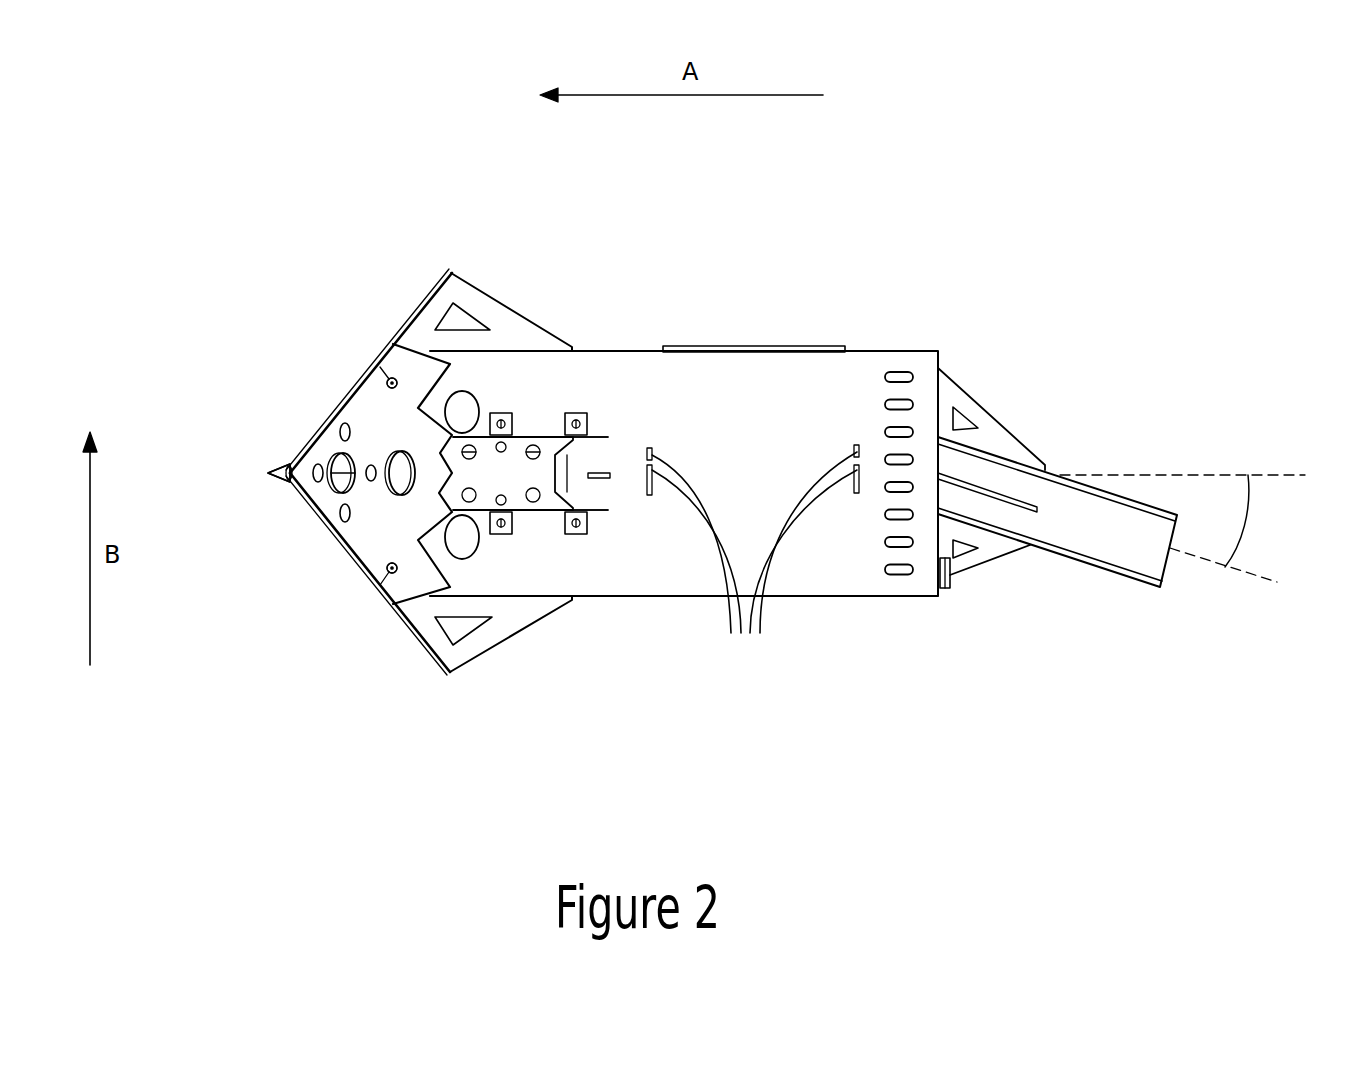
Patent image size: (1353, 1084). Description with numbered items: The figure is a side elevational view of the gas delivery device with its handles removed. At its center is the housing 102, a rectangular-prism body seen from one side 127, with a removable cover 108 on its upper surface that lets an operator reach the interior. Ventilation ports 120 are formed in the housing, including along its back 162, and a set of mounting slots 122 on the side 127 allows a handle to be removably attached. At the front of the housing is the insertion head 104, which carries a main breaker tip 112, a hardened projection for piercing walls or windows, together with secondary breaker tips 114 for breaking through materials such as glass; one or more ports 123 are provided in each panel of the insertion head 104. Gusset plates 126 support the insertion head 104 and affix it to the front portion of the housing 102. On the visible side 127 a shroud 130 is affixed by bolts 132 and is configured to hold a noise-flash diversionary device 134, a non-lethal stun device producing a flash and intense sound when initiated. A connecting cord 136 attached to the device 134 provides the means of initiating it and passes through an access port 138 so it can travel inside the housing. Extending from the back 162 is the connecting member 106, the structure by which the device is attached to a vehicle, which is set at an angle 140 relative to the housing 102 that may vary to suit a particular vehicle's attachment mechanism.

The housing 102 is at (870, 344).
The insertion head 104 is at (338, 386).
The connecting member 106 is at (1049, 562).
The removable cover 108 is at (823, 347).
The main breaker tip 112 is at (268, 474).
The secondary breaker tips 114 is at (385, 332).
The ports 120 is at (480, 402).
The mounting slots 122 is at (754, 561).
The ports 123 is at (393, 496).
The gusset plates 126 is at (481, 295).
The side 127 is at (828, 580).
The shroud 130 is at (548, 513).
The bolts 132 is at (508, 413).
The noise-flash diversionary device (NFDD) 134 is at (568, 462).
The connecting cord 136 is at (573, 480).
The access port 138 is at (603, 479).
The angle 140 is at (1258, 532).
The back 162 is at (962, 383).